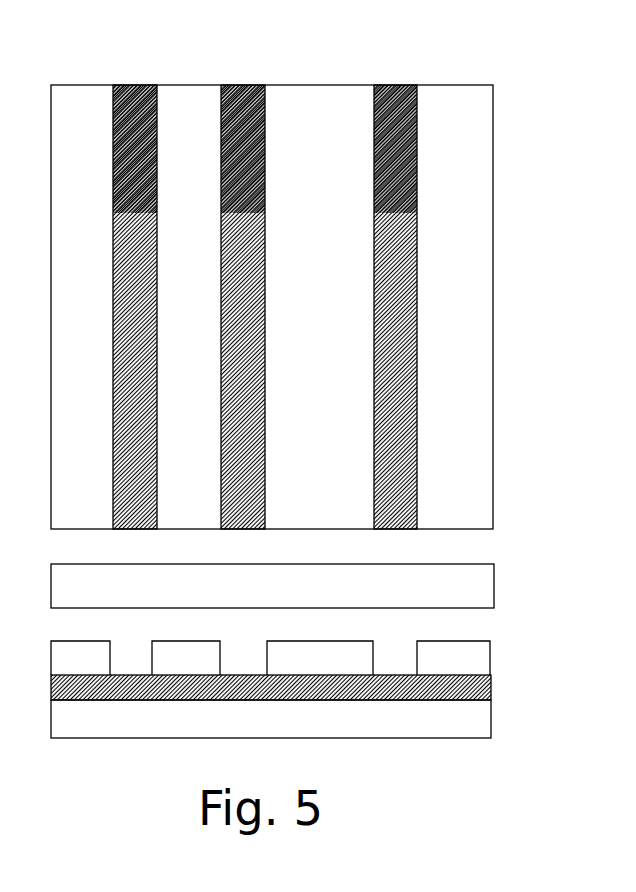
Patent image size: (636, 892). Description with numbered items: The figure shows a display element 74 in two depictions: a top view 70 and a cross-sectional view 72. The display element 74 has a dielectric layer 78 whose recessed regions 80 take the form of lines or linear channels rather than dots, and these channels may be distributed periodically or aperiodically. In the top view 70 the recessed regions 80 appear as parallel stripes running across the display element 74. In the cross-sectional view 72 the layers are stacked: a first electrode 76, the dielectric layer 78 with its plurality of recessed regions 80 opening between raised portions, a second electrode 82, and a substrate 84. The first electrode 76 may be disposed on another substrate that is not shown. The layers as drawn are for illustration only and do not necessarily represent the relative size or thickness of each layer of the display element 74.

The top view 70 is at (532, 296).
The cross-sectional view 72 is at (322, 717).
The display element 74 is at (560, 100).
The first electrode 76 is at (497, 570).
The dielectric layer 78 is at (492, 665).
The recessed regions 80 is at (404, 653).
The second electrode 82 is at (492, 691).
The substrate 84 is at (492, 736).